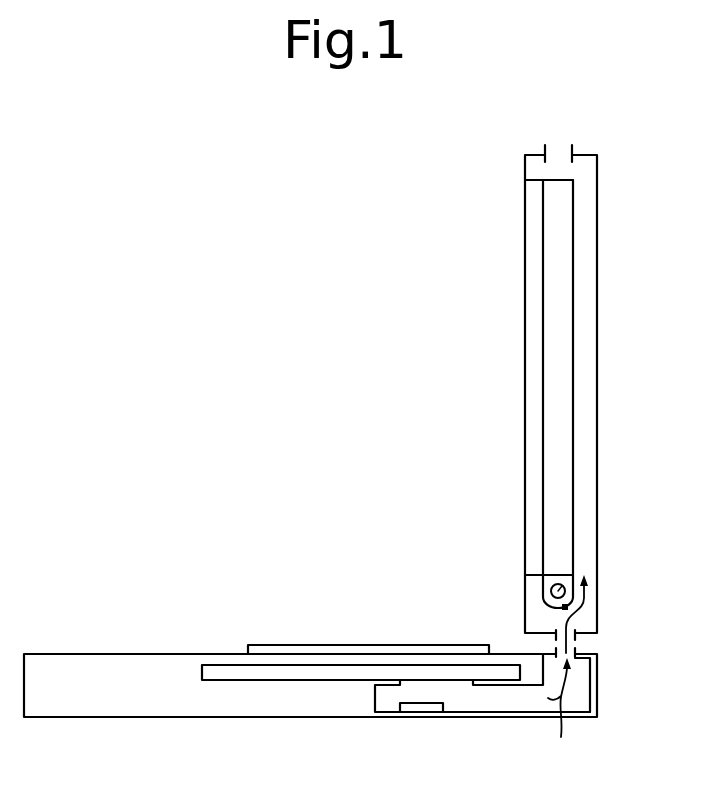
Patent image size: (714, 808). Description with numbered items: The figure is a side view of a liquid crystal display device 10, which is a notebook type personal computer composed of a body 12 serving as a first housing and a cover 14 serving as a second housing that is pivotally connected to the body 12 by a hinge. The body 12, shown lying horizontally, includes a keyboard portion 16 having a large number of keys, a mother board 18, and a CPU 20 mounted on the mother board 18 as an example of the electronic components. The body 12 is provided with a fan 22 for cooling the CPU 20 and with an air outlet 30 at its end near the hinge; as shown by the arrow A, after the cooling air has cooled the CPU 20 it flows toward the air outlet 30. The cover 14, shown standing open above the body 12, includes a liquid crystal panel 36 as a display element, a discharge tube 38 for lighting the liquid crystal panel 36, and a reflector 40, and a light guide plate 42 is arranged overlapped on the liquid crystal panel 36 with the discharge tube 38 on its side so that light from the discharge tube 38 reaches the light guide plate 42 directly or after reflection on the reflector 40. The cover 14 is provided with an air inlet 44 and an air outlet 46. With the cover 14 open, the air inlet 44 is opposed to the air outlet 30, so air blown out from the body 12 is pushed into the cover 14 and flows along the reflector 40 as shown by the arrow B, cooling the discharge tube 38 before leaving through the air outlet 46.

The liquid crystal display device 10 is at (403, 243).
The body 12 is at (120, 662).
The cover 14 is at (585, 417).
The keyboard portion 16 is at (298, 651).
The mother board 18 is at (228, 672).
The CPU 20 is at (422, 682).
The fan 22 is at (418, 705).
The air outlet 30 is at (568, 655).
The liquid crystal panel 36 is at (530, 375).
The discharge tube 38 is at (561, 583).
The reflector 40 is at (560, 615).
The light guide plate 42 is at (560, 323).
The air inlet 44 is at (577, 614).
The air outlet 46 is at (558, 157).
The arrow A is at (566, 707).
The arrow B is at (590, 602).